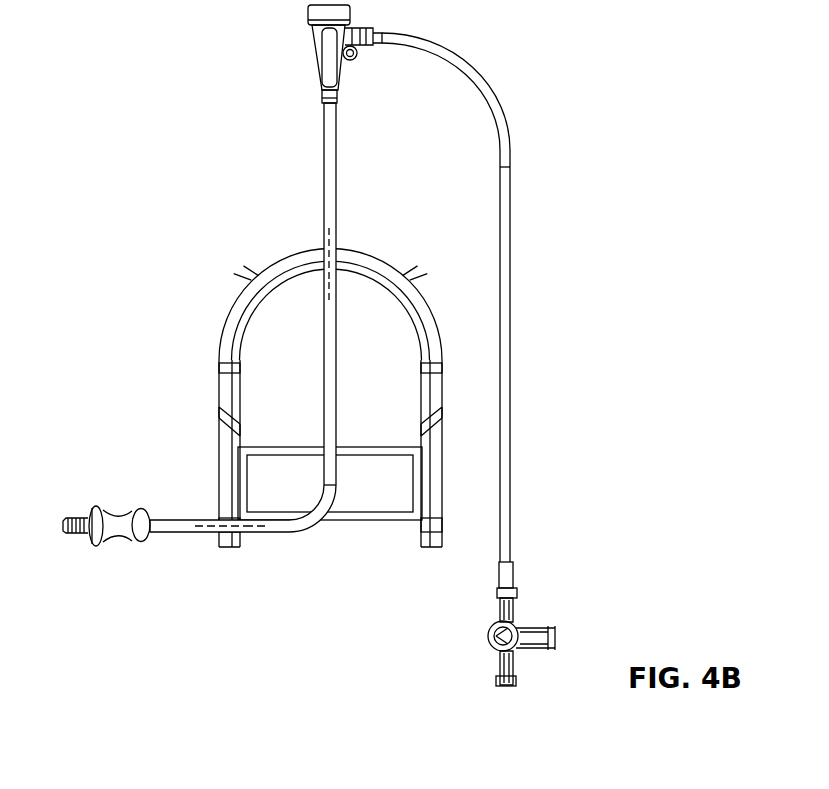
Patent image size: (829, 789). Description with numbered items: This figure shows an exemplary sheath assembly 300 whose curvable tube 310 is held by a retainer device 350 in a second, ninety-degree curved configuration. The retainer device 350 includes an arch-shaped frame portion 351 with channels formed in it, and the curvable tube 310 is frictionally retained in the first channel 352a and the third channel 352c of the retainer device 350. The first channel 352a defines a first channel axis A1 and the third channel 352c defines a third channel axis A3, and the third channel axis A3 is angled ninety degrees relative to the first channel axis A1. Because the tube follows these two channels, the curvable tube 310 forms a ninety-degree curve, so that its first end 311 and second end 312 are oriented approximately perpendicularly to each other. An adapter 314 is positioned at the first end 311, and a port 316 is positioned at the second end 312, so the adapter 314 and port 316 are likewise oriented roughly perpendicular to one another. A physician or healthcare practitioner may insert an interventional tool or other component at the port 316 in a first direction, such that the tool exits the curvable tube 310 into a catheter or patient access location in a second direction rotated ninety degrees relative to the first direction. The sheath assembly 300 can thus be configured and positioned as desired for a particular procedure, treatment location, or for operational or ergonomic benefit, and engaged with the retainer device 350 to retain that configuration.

The sheath assembly 300 is at (124, 44).
The curvable tube 310 is at (344, 179).
The first end 311 is at (142, 508).
The second end 312 is at (322, 97).
The adapter 314 is at (100, 508).
The port 316 is at (315, 62).
The retainer device 350 is at (403, 262).
The arch frame 351 is at (221, 316).
The first channel 352a is at (249, 534).
The third channel 352c is at (324, 247).
The first channel axis A1 is at (213, 534).
The third channel axis A3 is at (333, 243).